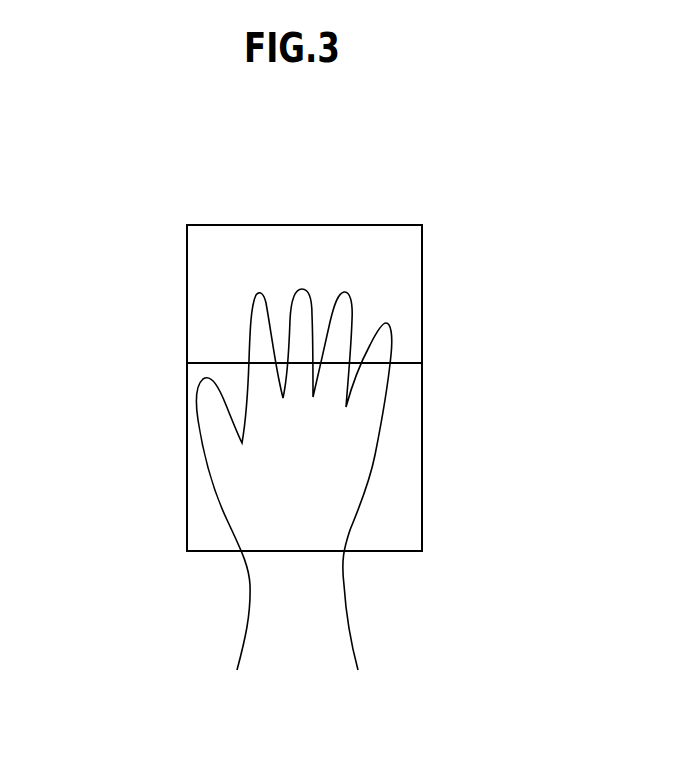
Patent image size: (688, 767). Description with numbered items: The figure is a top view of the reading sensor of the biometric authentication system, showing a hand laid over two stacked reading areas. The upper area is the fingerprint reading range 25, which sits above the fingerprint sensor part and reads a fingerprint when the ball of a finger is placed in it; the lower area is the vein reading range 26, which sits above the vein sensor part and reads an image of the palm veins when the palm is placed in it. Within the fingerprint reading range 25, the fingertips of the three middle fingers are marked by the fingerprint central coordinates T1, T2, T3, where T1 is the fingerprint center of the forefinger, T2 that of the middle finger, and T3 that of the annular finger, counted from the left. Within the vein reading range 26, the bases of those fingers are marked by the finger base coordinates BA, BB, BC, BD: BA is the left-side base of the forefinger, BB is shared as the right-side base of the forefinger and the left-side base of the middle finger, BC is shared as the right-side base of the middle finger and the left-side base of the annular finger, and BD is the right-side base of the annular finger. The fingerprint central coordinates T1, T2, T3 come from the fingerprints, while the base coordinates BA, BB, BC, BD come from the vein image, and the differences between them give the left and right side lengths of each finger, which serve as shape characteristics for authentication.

The fingerprint reading range 25 is at (407, 308).
The vein reading range 26 is at (407, 415).
The fingerprint central coordinates of the first finger T1 is at (252, 293).
The fingerprint central coordinates of the second finger T2 is at (296, 290).
The fingerprint central coordinates of the third finger T3 is at (338, 290).
The left-side base coordinates of the first finger BA is at (242, 450).
The base coordinates between the first and second fingers BB is at (281, 403).
The base coordinates between the second and third fingers BC is at (311, 403).
The right-side base coordinates of the third finger BD is at (345, 415).